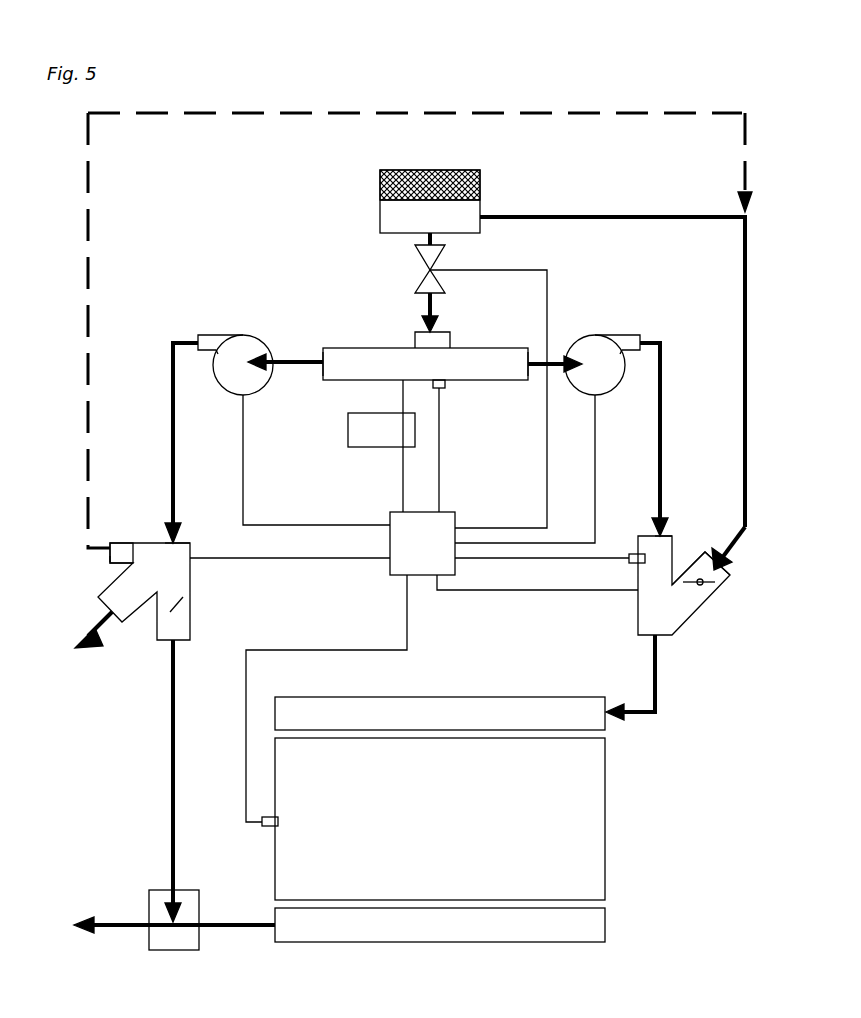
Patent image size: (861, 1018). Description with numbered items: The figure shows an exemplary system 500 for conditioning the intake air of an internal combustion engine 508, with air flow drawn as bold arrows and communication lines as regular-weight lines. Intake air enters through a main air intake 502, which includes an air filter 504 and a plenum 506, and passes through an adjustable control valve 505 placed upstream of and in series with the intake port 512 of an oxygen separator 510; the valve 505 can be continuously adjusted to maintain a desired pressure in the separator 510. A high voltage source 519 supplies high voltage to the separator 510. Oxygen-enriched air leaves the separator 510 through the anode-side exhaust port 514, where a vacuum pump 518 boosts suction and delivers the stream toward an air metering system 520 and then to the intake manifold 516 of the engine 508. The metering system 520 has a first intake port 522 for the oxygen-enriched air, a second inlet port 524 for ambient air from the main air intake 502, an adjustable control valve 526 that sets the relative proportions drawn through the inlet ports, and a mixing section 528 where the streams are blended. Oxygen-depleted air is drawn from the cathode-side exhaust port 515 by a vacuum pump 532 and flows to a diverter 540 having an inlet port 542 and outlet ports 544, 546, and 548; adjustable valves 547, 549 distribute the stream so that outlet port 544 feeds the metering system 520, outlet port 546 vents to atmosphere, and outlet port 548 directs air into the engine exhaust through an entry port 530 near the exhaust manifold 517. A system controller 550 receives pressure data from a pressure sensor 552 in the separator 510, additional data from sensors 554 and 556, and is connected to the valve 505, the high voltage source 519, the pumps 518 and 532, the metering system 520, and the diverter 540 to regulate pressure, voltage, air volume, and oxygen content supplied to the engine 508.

The system 500 is at (642, 60).
The main air intake 502 is at (522, 355).
The air filter 504 is at (400, 178).
The plenum 506 is at (405, 216).
The adjustable control valve 505 is at (418, 250).
The oxygen separator 510 is at (415, 396).
The intake port 512 is at (415, 332).
The anode-side exhaust port 514 is at (535, 346).
The cathode-side exhaust port 515 is at (318, 382).
The pressure sensor 552 is at (446, 388).
The high voltage source 519 is at (382, 432).
The system controller 550 is at (414, 667).
The vacuum pump 532 is at (248, 350).
The vacuum pump 518 is at (597, 348).
The air metering system 520 is at (693, 608).
The first intake port 522 is at (665, 535).
The second inlet port 524 is at (728, 575).
The adjustable control valve 526 is at (712, 588).
The mixing section 528 is at (655, 618).
The sensor 554 is at (628, 562).
The diverter 540 is at (161, 706).
The inlet port 542 is at (190, 547).
The outlet port 544 is at (108, 560).
The outlet port 546 is at (120, 622).
The adjustable valve 547 is at (125, 552).
The outlet port 548 is at (168, 645).
The adjustable valve 549 is at (185, 615).
The entry port 530 is at (150, 888).
The intake manifold 516 is at (412, 697).
The internal combustion engine 508 is at (440, 819).
The exhaust manifold 517 is at (440, 940).
The sensor 556 is at (268, 828).